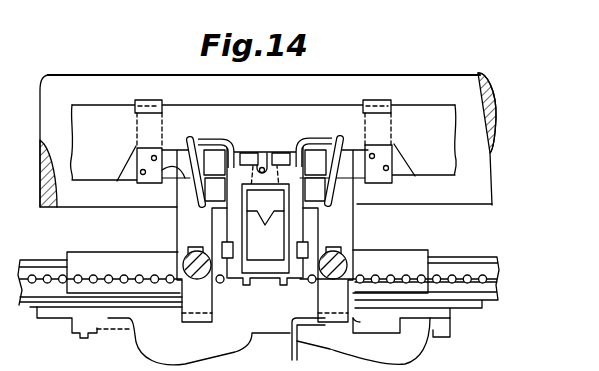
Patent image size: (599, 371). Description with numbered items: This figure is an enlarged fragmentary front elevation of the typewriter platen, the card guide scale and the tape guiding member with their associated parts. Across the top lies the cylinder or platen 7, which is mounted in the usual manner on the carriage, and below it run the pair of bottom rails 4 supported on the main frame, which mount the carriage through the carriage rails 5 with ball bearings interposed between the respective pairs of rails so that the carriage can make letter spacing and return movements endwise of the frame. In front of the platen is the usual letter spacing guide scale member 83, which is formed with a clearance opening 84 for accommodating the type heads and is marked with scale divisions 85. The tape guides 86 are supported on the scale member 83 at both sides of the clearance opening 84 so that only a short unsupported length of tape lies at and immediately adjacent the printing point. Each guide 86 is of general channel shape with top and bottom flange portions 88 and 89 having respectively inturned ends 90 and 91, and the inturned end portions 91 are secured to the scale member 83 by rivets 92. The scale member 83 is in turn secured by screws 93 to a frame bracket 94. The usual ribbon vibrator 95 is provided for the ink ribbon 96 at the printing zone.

The bottom rails 4 is at (475, 258).
The carriage rails 5 is at (410, 255).
The platen 7 is at (58, 208).
The letter spacing guide scale member 83 is at (187, 226).
The clearance opening 84 is at (290, 150).
The scale divisions 85 is at (357, 150).
The tape guides 86 is at (161, 124).
The top flange portion 88 is at (147, 100).
The bottom flange portion 89 is at (140, 186).
The inturned end 90 is at (135, 108).
The inturned end portion 91 is at (137, 163).
The rivets 92 is at (125, 176).
The screws 93 is at (197, 285).
The frame bracket 94 is at (276, 320).
The ribbon vibrator 95 is at (217, 147).
The ink ribbon 96 is at (178, 186).